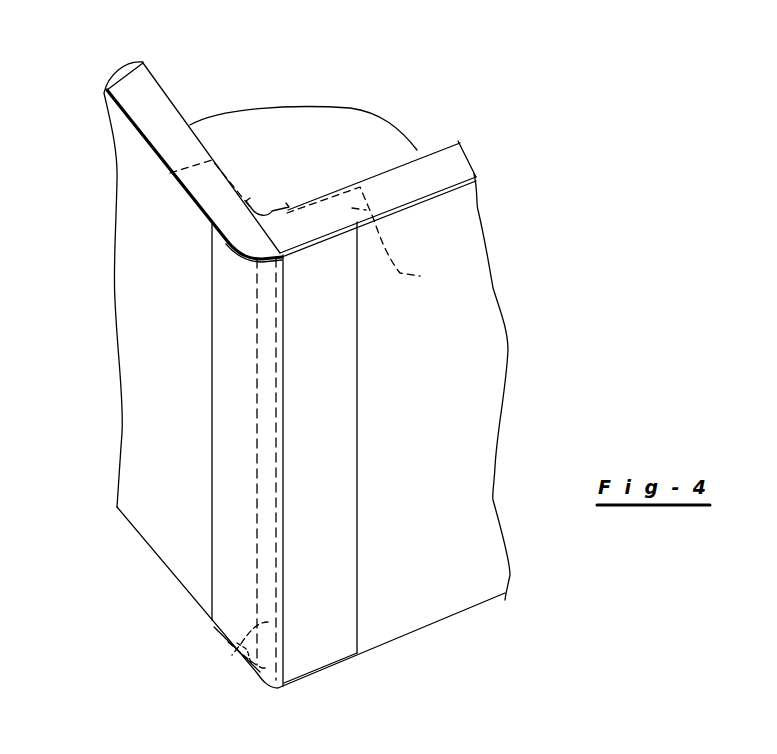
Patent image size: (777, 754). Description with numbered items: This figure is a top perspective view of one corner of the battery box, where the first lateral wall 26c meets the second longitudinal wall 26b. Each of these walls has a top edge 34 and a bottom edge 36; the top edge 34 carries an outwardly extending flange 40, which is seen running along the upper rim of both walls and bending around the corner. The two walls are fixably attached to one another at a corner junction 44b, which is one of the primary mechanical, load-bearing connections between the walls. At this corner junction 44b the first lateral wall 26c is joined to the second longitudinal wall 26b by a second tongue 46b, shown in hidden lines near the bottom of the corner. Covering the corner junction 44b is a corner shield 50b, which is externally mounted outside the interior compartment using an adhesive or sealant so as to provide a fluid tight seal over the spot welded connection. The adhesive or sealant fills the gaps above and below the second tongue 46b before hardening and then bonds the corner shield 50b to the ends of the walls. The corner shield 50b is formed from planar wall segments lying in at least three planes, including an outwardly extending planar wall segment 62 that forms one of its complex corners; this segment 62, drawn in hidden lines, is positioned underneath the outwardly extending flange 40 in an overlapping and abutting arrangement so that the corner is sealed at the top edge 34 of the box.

The top edge 34 is at (162, 76).
The outwardly extending flange 40 is at (148, 108).
The corner junction 44b is at (273, 200).
The outwardly extending planar wall segment 62 is at (207, 188).
The second longitudinal wall 26b is at (157, 337).
The first lateral wall 26c is at (470, 347).
The bottom edge 36 is at (150, 563).
The second tongue 46b is at (237, 643).
The corner shield 50b is at (313, 613).